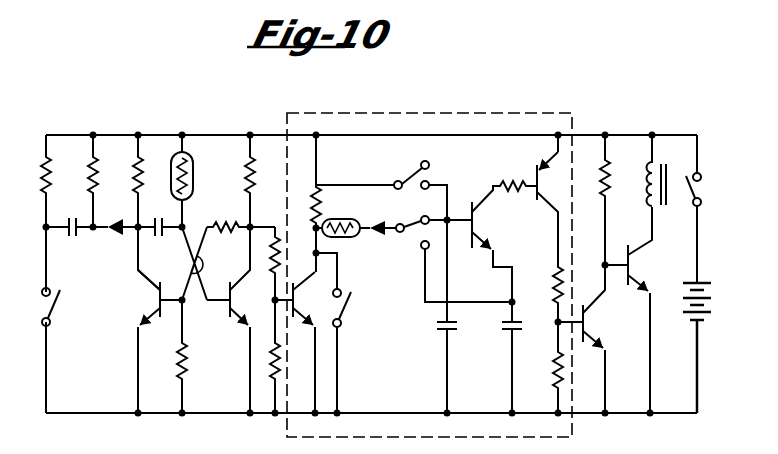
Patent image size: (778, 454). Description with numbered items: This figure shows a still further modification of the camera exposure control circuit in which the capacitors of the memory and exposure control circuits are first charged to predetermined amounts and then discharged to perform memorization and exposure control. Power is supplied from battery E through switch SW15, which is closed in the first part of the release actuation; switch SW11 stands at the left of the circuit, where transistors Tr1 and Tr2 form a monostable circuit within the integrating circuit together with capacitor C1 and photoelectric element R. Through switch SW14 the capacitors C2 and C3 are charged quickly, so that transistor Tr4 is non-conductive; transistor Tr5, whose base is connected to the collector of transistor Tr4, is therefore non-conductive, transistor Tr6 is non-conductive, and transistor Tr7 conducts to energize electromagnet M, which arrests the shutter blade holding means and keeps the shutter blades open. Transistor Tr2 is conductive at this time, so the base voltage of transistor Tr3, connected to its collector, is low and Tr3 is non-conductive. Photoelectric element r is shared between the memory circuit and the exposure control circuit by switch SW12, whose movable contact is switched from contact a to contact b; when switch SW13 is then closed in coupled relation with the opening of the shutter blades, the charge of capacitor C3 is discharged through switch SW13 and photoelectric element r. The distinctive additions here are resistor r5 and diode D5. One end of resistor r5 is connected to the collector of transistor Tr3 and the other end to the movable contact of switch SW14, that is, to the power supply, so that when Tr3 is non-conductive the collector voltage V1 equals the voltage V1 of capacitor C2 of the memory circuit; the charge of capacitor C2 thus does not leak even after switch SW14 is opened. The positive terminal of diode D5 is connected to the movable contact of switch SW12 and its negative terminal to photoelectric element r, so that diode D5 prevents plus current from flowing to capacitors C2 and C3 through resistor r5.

The switch SW11 is at (73, 307).
The switch SW12 is at (395, 218).
The switch SW13 is at (355, 333).
The switch SW14 is at (393, 183).
The switch SW15 is at (716, 209).
The transistor Tr1 is at (160, 341).
The transistor Tr2 is at (228, 320).
The transistor Tr3 is at (295, 342).
The transistor Tr4 is at (492, 241).
The transistor Tr5 is at (566, 274).
The transistor Tr6 is at (581, 339).
The transistor Tr7 is at (631, 310).
The capacitor C1 is at (152, 220).
The capacitor C2 is at (456, 316).
The capacitor C3 is at (520, 357).
The diode D5 is at (379, 245).
The photoelectric element R is at (190, 181).
The photoelectric element r is at (343, 218).
The resistor r5 is at (305, 203).
The voltage V1 is at (381, 247).
The contact a is at (432, 212).
The contact b is at (466, 266).
The electromagnet M is at (665, 170).
The power source E is at (703, 348).